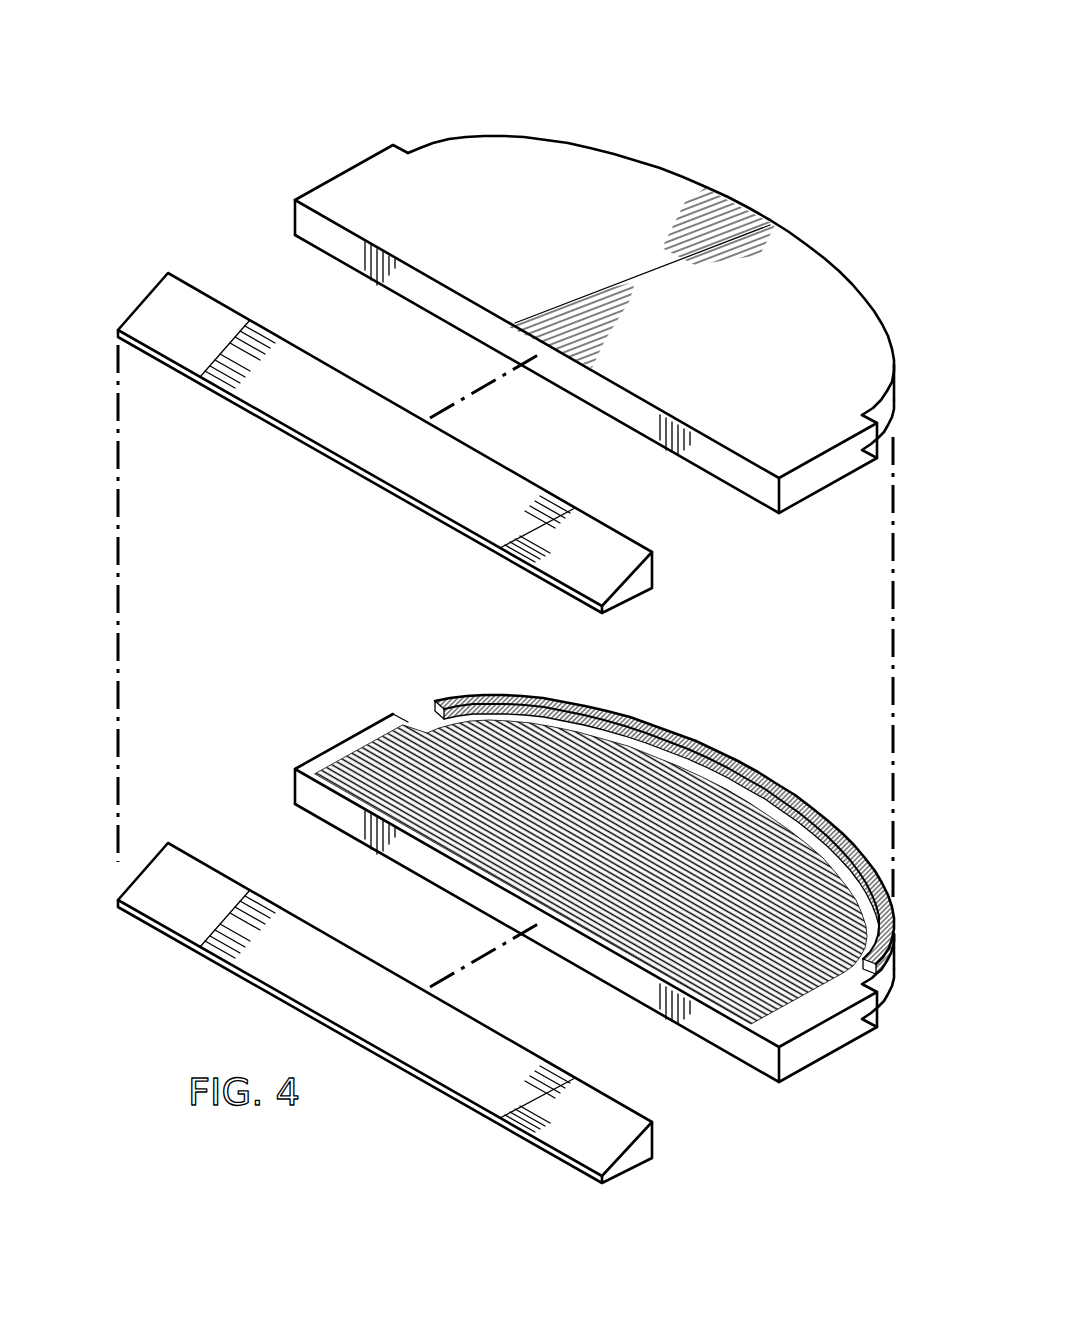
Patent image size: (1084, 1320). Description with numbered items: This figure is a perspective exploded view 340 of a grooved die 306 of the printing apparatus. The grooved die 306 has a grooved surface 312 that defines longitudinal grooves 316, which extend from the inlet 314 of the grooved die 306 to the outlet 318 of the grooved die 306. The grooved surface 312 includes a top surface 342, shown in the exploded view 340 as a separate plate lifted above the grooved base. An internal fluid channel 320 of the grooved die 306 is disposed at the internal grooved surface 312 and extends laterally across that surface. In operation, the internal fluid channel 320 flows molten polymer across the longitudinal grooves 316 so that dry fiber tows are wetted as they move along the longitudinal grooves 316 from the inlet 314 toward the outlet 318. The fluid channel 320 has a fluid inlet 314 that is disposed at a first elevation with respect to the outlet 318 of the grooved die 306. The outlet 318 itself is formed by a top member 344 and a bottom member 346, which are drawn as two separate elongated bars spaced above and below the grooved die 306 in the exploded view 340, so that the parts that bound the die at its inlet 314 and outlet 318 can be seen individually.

The perspective exploded view 340 is at (300, 88).
The grooved die 306 is at (594, 285).
The top surface 342 is at (833, 258).
The top member 344 is at (145, 301).
The outlet 318 is at (150, 637).
The grooved surface 312 is at (622, 888).
The inlet 314 is at (770, 787).
The longitudinal grooves 316 is at (470, 858).
The internal fluid channel 320 is at (880, 980).
The bottom member 346 is at (625, 1160).